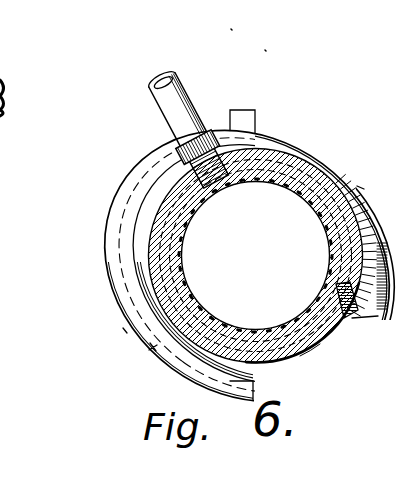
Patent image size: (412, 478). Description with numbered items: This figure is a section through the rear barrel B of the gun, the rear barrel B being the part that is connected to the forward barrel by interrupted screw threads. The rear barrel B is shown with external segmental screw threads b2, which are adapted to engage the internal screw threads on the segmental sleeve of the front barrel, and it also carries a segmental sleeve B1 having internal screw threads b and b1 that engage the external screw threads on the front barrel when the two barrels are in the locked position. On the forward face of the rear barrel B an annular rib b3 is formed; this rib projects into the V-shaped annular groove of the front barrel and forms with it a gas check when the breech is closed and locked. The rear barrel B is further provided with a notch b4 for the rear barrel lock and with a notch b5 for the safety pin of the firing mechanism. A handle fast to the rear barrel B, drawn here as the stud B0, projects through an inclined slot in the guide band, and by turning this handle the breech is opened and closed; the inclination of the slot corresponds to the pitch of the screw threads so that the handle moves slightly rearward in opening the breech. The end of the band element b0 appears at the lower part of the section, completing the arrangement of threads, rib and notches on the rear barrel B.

The rear barrel B is at (147, 233).
The stud B0 is at (183, 95).
The segmental sleeve B1 is at (123, 328).
The internal screw thread b is at (258, 122).
The band end b0 is at (255, 388).
The internal screw thread b1 is at (228, 266).
The external segmental screw thread b2 is at (146, 353).
The annular rib b3 is at (293, 200).
The notch b4 is at (303, 368).
The notch b5 is at (357, 317).